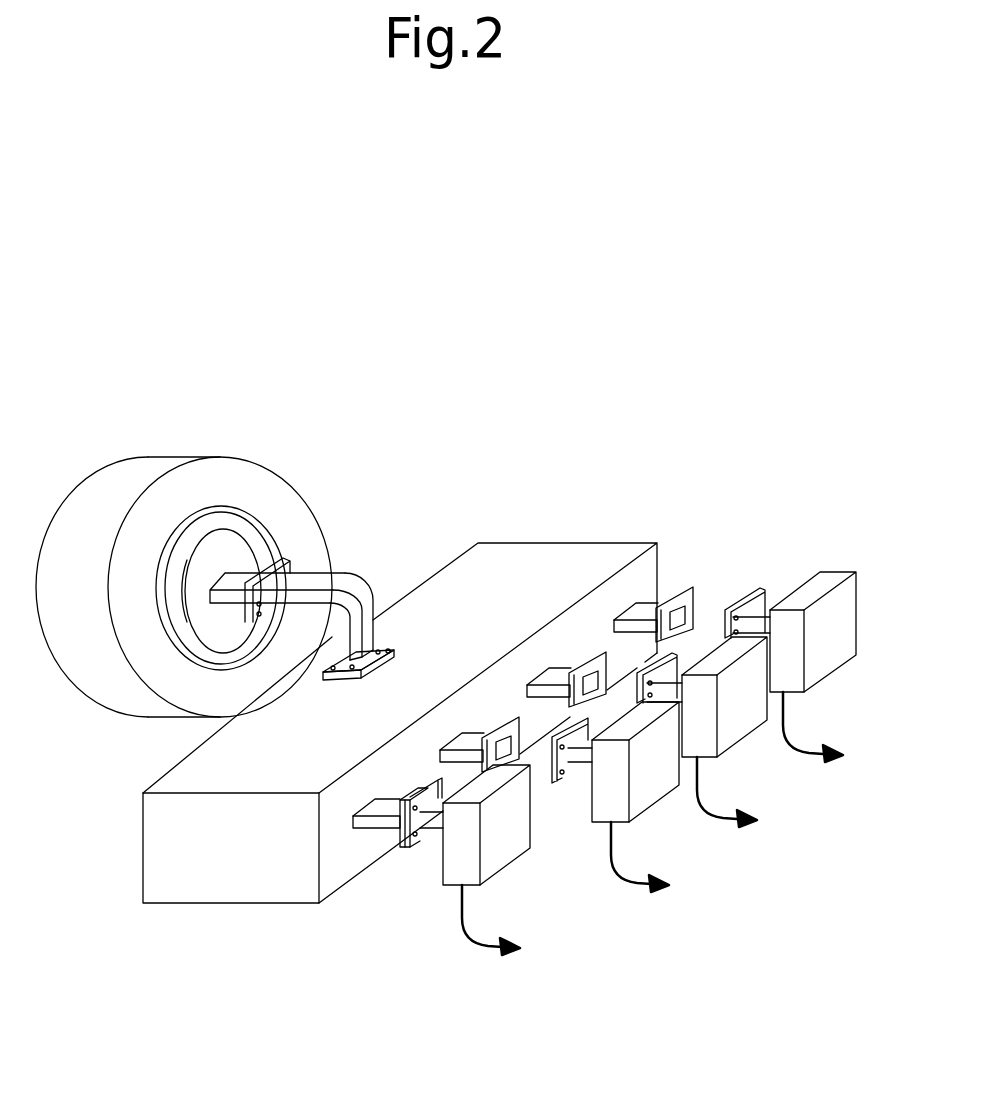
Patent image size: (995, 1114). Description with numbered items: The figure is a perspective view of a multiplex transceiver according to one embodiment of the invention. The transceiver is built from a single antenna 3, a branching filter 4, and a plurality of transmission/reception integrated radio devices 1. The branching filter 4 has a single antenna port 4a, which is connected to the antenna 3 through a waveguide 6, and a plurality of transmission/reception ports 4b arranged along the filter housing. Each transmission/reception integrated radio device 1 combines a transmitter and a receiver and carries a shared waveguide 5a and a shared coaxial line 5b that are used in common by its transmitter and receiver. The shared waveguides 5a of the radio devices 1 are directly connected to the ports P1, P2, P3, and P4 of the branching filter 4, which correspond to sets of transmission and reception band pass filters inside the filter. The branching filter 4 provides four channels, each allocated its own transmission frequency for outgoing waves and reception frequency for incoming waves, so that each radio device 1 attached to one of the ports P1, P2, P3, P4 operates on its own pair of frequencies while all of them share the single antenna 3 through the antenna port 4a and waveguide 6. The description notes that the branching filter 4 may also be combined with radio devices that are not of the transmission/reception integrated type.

The transmission/reception integrated radio device 1 is at (505, 855).
The antenna 3 is at (292, 490).
The branching filter 4 is at (496, 556).
The antenna port 4a is at (391, 643).
The transmission/reception port 4b is at (398, 848).
The shared waveguide 5a is at (400, 800).
The shared coaxial line 5b is at (462, 927).
The waveguide 6 is at (308, 575).
The port P1 is at (365, 825).
The port P2 is at (460, 737).
The port P3 is at (543, 680).
The port P4 is at (637, 610).